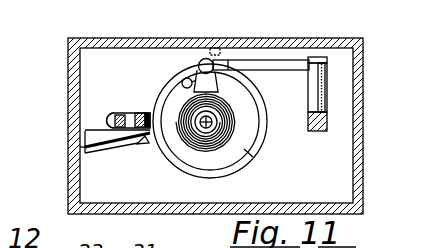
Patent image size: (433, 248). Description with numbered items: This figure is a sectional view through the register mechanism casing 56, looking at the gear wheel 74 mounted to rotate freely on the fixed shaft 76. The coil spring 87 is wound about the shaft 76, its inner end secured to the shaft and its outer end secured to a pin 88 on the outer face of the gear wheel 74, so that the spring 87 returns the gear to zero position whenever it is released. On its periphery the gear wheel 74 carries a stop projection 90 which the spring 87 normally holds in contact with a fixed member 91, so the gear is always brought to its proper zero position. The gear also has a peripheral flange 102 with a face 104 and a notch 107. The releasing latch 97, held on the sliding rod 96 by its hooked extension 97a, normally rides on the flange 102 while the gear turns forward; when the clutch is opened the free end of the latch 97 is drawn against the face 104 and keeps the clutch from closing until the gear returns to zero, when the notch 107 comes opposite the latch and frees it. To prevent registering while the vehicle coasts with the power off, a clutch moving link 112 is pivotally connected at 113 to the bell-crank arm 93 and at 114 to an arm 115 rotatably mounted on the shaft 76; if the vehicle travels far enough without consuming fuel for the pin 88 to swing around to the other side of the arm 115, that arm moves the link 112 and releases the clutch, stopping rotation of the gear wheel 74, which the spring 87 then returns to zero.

The register mechanism casing 56 is at (76, 136).
The gear wheel 74 is at (236, 147).
The shaft 76 is at (207, 128).
The coil spring 87 is at (222, 133).
The pin 88 is at (198, 66).
The stop projection 90 is at (146, 140).
The fixed member 91 is at (100, 138).
The bell-crank arm 93 is at (327, 115).
The sliding rod 96 is at (117, 113).
The releasing latch 97 is at (118, 110).
The hooked extension 97a is at (112, 112).
The peripheral flange 102 is at (183, 200).
The face 104 is at (260, 96).
The notch 107 is at (146, 112).
The clutch moving link 112 is at (274, 62).
The pivot connection 113 is at (315, 58).
The pivot connection 114 is at (208, 62).
The arm 115 is at (226, 68).